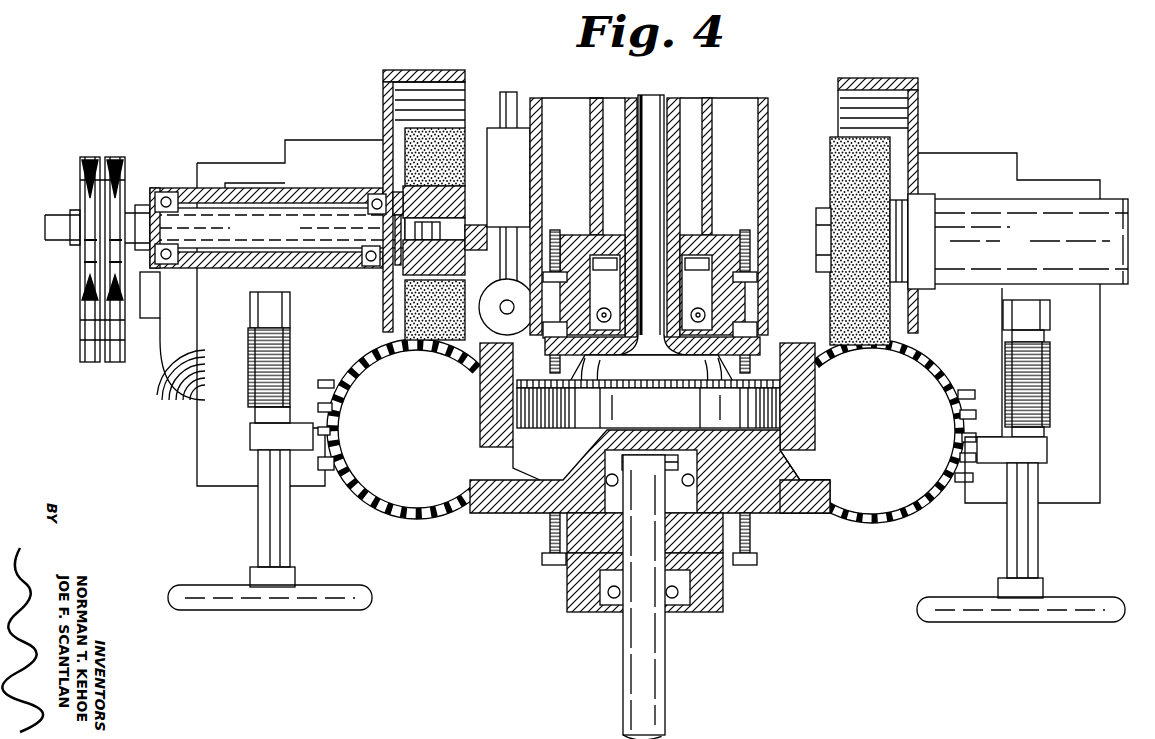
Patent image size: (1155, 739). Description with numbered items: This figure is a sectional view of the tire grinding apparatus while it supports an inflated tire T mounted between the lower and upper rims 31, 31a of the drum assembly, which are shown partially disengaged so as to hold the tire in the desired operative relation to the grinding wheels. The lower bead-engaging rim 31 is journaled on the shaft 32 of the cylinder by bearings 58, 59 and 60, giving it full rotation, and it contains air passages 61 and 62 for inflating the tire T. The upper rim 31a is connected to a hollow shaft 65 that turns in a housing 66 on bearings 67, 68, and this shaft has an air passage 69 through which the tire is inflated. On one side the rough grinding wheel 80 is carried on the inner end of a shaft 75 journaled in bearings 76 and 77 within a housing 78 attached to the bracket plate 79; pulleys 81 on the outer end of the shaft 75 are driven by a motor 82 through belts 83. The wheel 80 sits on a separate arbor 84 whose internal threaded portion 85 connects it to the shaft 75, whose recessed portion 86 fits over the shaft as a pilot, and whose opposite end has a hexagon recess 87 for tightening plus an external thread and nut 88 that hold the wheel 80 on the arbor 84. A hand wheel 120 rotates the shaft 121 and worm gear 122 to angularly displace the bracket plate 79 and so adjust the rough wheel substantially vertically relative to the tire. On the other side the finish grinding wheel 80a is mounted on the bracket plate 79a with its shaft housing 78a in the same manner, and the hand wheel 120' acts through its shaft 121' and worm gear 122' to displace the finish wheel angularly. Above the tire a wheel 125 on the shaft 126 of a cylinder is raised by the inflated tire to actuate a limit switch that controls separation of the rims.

The belts 83 is at (112, 160).
The pulleys 81 is at (108, 253).
The bearing 76 is at (166, 197).
The housing 78 is at (260, 195).
The shaft 75 is at (258, 235).
The motor 82 is at (175, 348).
The worm gear 122 is at (225, 371).
The shaft 121 is at (299, 518).
The hand wheel 120 is at (270, 614).
The bracket plate 79 is at (393, 95).
The rough grinding wheel 80 is at (420, 140).
The recessed portion 86 is at (400, 205).
The bearing 77 is at (375, 203).
The internal threaded portion 85 is at (395, 280).
The arbor 84 is at (440, 223).
The external thread and nut 88 is at (427, 242).
The hexagon recess 87 is at (455, 260).
The shaft 126 is at (522, 247).
The wheel 125 is at (507, 335).
The air passage 69 is at (645, 98).
The hollow shaft 65 is at (672, 115).
The bearing 68 is at (705, 245).
The housing 66 is at (575, 305).
The bearing 67 is at (752, 312).
The bearing 58 is at (673, 480).
The air passage 61 is at (500, 472).
The air passage 62 is at (805, 470).
The upper rim 31a is at (800, 400).
The lower rim 31 is at (805, 512).
The tire T is at (940, 368).
The bearing 59 is at (725, 576).
The bearing 60 is at (690, 600).
The shaft 32 is at (655, 685).
The bracket plate 79a is at (910, 105).
The finish grinding wheel 80a is at (878, 155).
The housing 78a is at (1030, 215).
The worm gear 122' is at (1064, 381).
The shaft 121' is at (1048, 530).
The hand wheel 120' is at (1021, 623).